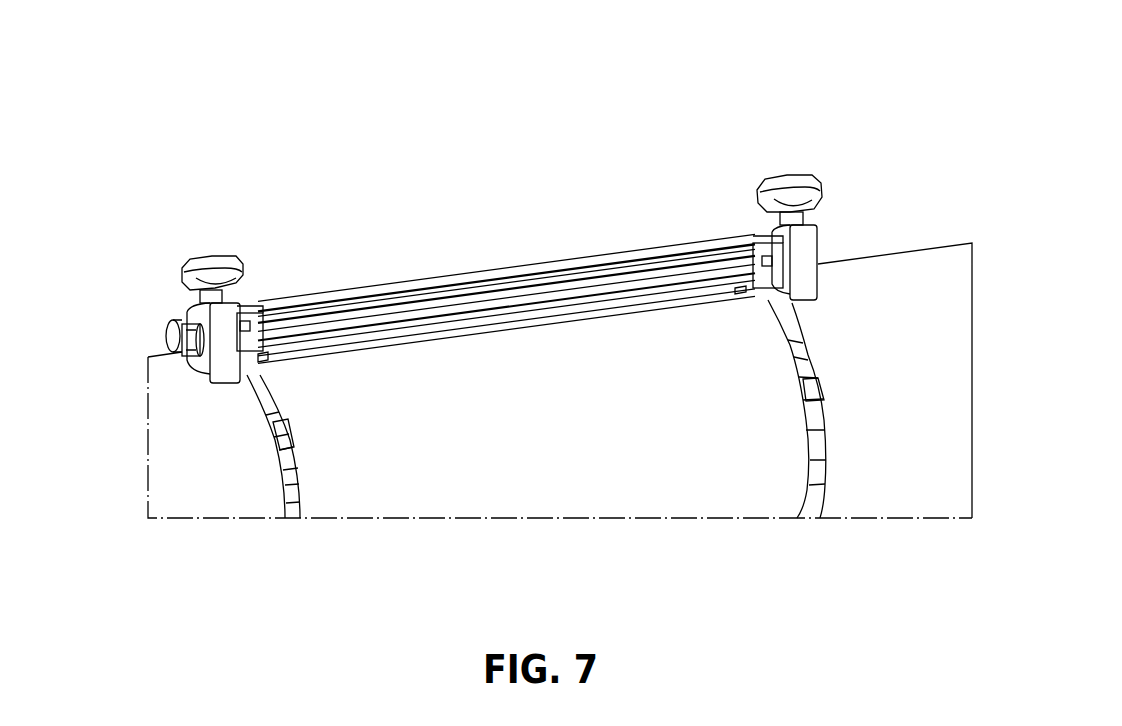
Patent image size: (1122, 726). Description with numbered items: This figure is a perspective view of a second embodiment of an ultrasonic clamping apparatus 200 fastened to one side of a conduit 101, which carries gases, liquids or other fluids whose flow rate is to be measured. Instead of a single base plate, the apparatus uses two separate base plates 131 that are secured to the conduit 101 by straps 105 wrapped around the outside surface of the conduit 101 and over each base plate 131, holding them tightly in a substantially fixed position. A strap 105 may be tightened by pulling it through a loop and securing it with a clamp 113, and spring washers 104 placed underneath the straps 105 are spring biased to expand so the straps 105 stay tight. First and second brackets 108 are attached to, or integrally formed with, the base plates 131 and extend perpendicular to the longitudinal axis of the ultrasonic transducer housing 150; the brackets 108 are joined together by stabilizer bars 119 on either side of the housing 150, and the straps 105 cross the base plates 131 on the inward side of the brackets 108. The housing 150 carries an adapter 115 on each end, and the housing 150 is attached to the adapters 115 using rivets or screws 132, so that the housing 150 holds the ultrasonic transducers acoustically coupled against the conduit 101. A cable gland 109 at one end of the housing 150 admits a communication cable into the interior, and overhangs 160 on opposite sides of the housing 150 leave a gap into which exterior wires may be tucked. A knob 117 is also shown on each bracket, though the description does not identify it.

The ultrasonic clamping apparatus 200 is at (693, 92).
The conduit 101 is at (575, 497).
The spring washers 104 is at (826, 455).
The straps 105 is at (785, 333).
The brackets 108 is at (232, 362).
The cable gland 109 is at (173, 323).
The clamp 113 is at (803, 393).
The adapter 115 is at (190, 317).
The knob 117 is at (791, 190).
The stabilizer bars 119 is at (383, 350).
The base plates 131 is at (267, 362).
The rivets or screws 132 is at (248, 305).
The ultrasonic transducer housing 150 is at (428, 280).
The overhangs 160 is at (323, 312).